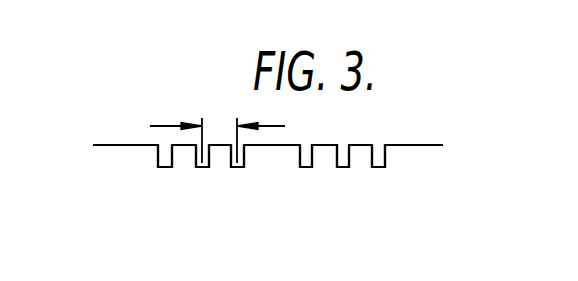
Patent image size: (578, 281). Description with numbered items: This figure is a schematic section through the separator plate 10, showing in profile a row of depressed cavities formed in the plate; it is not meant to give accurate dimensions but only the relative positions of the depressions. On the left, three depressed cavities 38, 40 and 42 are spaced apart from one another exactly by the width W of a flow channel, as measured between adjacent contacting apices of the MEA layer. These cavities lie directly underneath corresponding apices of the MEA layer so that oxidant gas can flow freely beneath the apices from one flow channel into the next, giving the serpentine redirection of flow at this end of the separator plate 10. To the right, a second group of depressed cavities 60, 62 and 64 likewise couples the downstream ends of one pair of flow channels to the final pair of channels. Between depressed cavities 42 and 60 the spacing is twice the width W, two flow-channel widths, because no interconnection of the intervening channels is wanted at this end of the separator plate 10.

The separator plate 10 is at (466, 145).
The depressed cavity 38 is at (163, 167).
The depressed cavity 40 is at (200, 167).
The depressed cavity 42 is at (237, 167).
The depressed cavity 60 is at (306, 167).
The depressed cavity 62 is at (343, 167).
The depressed cavity 64 is at (378, 167).
The width of a flow channel W is at (217, 128).